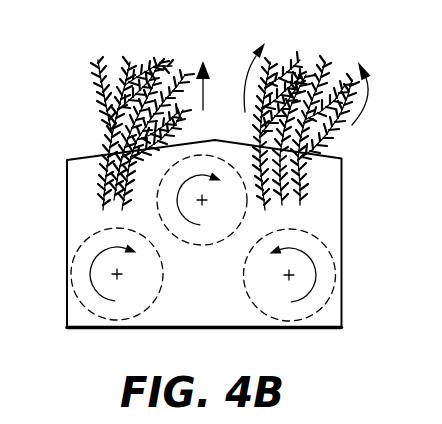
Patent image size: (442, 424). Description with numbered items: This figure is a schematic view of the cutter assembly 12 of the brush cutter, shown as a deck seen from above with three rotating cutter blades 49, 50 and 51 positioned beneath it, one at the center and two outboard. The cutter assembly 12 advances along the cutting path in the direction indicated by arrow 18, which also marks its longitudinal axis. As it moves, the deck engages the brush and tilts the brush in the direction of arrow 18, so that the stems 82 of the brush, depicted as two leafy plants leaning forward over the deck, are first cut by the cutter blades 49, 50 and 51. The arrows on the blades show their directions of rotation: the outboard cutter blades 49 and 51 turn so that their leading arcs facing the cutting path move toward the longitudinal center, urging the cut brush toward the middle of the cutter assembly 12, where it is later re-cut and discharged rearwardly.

The cutter assembly 12 is at (345, 194).
The arrow 18 is at (205, 97).
The cutter blade 49 is at (82, 296).
The cutter blade 50 is at (203, 246).
The cutter blade 51 is at (329, 291).
The stems 82 is at (100, 190).